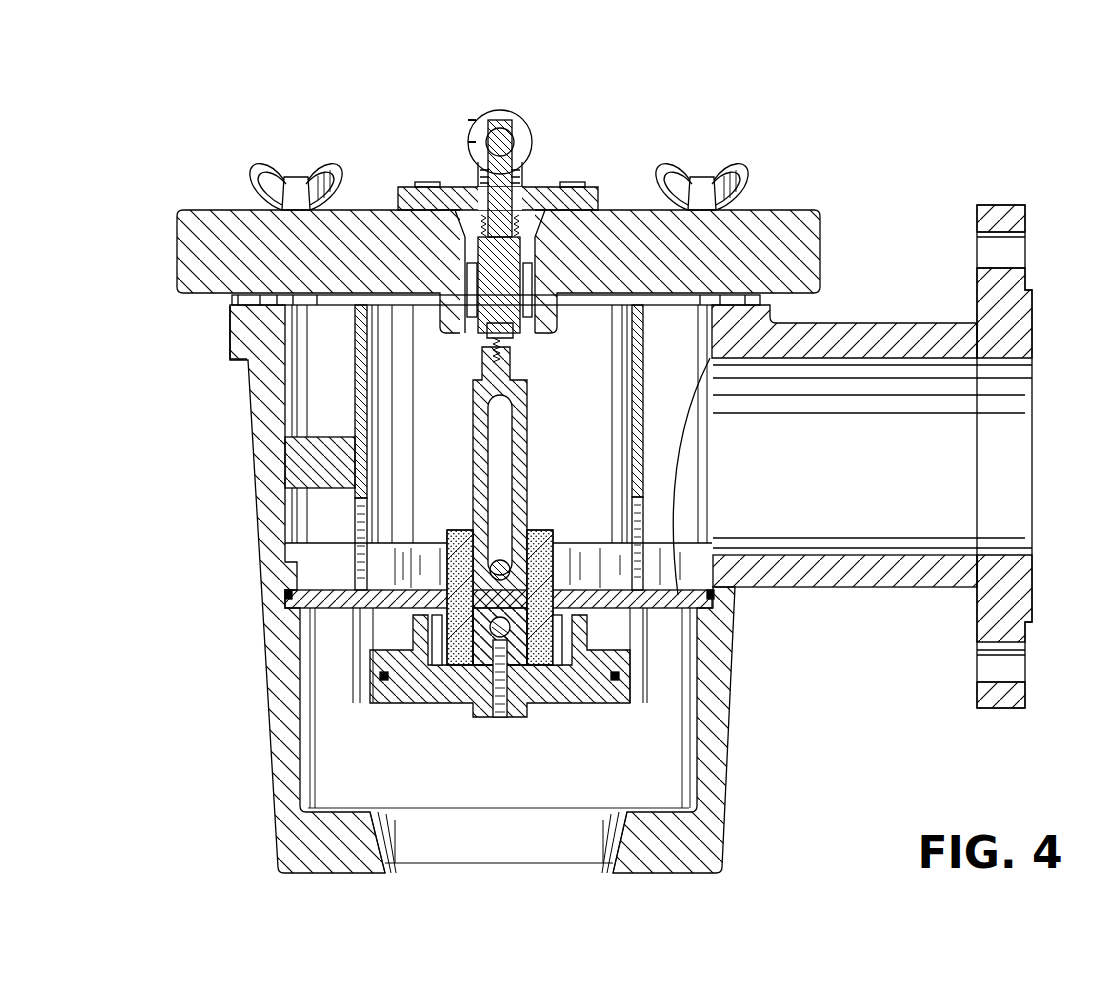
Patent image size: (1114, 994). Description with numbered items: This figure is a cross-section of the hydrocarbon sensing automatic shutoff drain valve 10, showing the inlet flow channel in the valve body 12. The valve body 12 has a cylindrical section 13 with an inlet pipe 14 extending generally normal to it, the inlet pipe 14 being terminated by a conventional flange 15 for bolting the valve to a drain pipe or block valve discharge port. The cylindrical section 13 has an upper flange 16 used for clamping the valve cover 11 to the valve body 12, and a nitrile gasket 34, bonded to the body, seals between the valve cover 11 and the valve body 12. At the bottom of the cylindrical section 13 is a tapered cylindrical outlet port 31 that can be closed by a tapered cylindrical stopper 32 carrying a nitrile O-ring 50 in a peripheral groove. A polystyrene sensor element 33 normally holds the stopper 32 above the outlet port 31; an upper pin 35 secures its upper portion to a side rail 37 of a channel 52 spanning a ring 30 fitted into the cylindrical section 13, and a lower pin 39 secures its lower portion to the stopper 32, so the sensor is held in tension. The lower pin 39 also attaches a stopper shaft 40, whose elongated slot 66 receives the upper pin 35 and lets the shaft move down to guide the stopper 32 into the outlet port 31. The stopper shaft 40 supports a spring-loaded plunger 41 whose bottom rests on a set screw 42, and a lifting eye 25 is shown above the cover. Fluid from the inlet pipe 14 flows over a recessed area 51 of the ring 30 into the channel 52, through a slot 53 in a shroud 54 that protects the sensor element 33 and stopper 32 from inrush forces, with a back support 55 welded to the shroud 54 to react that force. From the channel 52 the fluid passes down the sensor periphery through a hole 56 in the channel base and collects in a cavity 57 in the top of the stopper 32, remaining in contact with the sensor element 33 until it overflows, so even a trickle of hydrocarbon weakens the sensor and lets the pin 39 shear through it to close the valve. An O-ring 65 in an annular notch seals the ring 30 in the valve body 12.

The hydrocarbon sensing automatic shutoff drain valve 10 is at (748, 124).
The valve cover 11 is at (196, 210).
The valve body 12 is at (561, 589).
The cylindrical section 13 is at (278, 768).
The inlet pipe 14 is at (855, 575).
The flange 15 is at (1000, 206).
The upper flange 16 is at (233, 345).
The lifting eye 25 is at (505, 114).
The ring 30 is at (295, 594).
The tapered cylindrical outlet port 31 is at (398, 848).
The tapered cylindrical stopper 32 is at (420, 680).
The polystyrene sensor element 33 is at (531, 531).
The nitrile gasket 34 is at (235, 299).
The upper pin 35 is at (491, 541).
The side rail 37 is at (393, 556).
The lower pin 39 is at (500, 719).
The stopper shaft 40 is at (527, 425).
The spring-loaded plunger 41 is at (540, 296).
The set screw 42 is at (490, 352).
The nitrile O-ring 50 is at (383, 681).
The recessed area 51 is at (710, 546).
The channel 52 is at (692, 560).
The slot 53 is at (650, 515).
The shroud 54 is at (643, 410).
The back support 55 is at (300, 463).
The hole 56 is at (545, 590).
The cavity 57 is at (565, 655).
The nitrile O-ring 65 is at (287, 597).
The elongated slot 66 is at (508, 440).